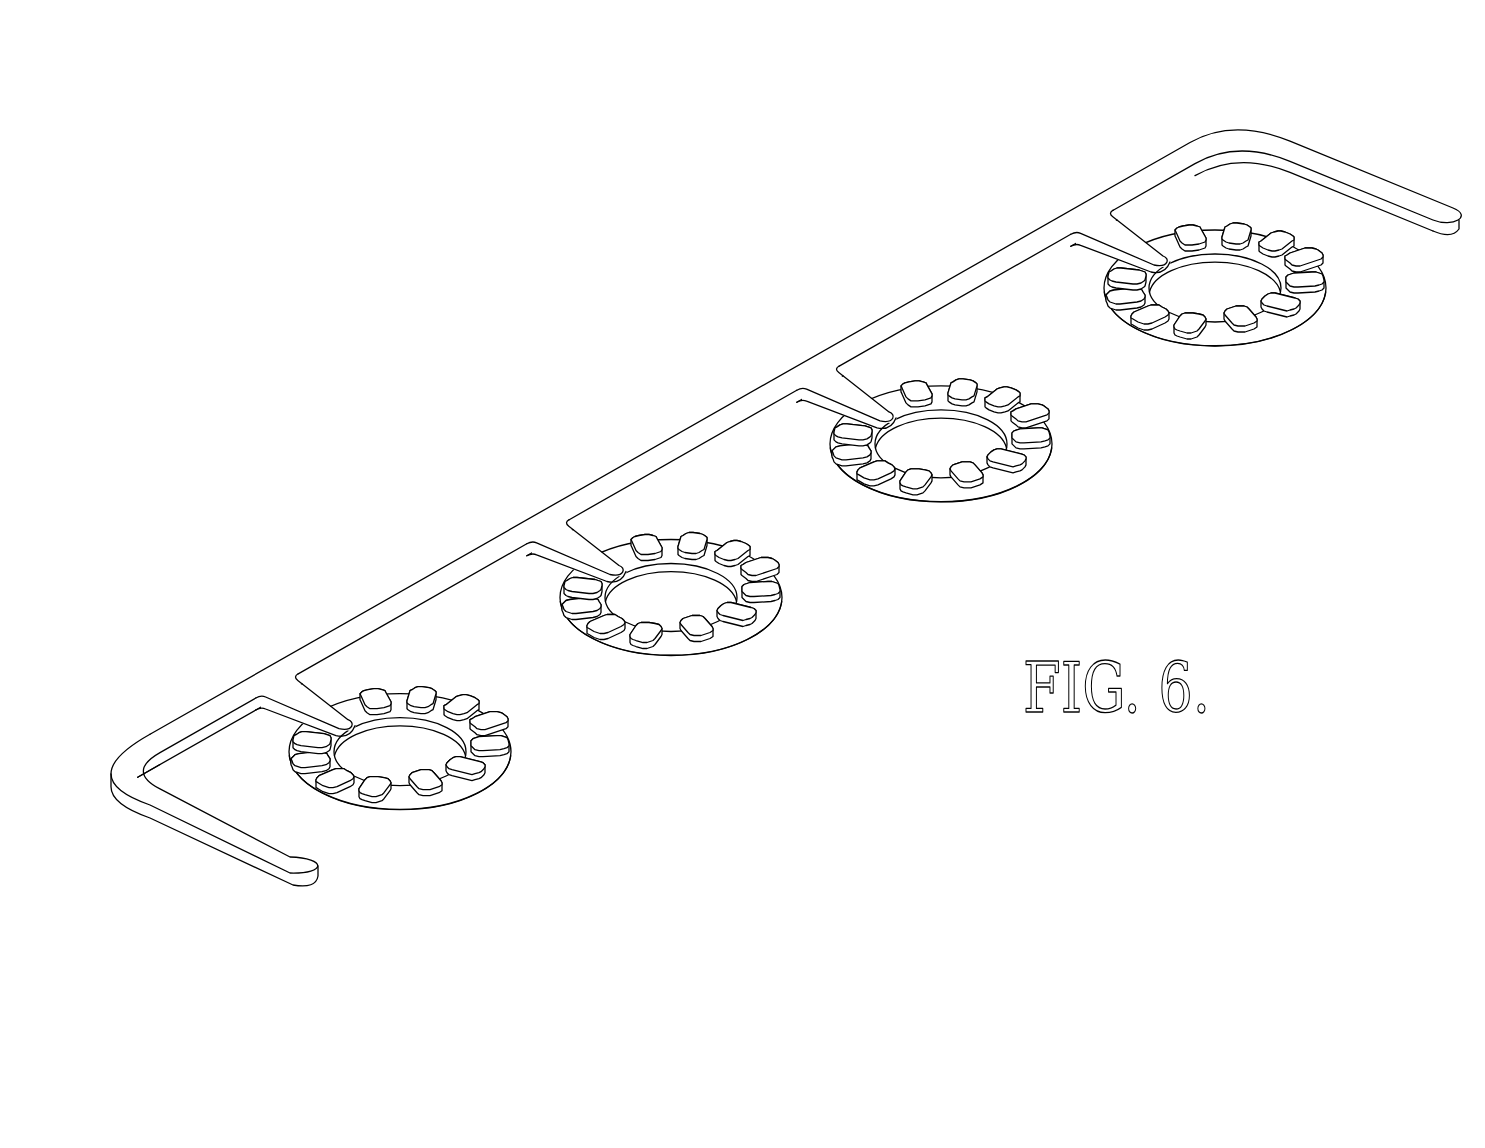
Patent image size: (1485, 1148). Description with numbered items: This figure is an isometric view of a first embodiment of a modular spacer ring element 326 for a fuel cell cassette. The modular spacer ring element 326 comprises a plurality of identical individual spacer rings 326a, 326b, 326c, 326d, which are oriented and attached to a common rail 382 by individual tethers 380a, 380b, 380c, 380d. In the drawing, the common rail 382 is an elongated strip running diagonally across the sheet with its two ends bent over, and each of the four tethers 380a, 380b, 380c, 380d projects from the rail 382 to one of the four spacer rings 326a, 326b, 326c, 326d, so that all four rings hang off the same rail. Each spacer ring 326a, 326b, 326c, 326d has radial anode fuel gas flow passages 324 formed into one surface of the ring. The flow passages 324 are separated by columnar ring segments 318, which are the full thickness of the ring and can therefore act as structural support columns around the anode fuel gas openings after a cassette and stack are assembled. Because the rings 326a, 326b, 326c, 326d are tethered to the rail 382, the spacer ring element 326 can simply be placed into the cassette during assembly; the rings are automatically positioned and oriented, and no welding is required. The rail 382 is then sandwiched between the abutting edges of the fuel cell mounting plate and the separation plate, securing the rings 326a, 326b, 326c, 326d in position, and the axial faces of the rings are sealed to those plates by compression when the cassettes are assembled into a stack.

The modular spacer ring element 326 is at (985, 224).
The common rail 382 is at (710, 422).
The tether 380a is at (313, 708).
The tether 380b is at (583, 553).
The tether 380c is at (843, 397).
The tether 380d is at (1118, 237).
The spacer ring 326a is at (506, 767).
The spacer ring 326b is at (737, 620).
The spacer ring 326c is at (1053, 450).
The spacer ring 326d is at (1325, 300).
The columnar ring segments 318 is at (687, 610).
The radial anode fuel gas flow passages 324 is at (684, 620).